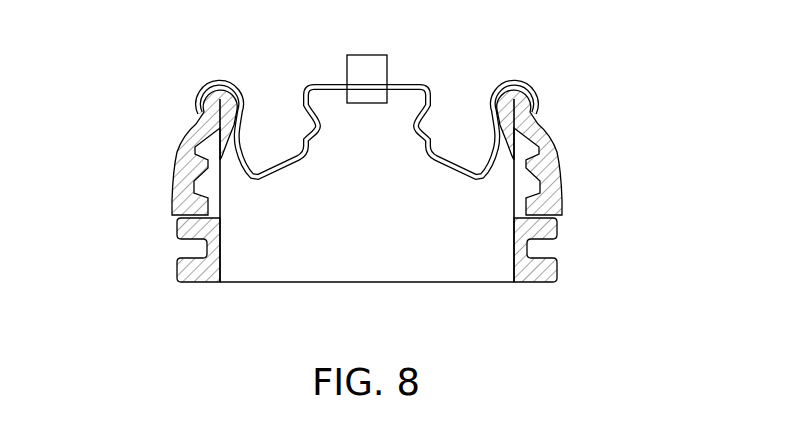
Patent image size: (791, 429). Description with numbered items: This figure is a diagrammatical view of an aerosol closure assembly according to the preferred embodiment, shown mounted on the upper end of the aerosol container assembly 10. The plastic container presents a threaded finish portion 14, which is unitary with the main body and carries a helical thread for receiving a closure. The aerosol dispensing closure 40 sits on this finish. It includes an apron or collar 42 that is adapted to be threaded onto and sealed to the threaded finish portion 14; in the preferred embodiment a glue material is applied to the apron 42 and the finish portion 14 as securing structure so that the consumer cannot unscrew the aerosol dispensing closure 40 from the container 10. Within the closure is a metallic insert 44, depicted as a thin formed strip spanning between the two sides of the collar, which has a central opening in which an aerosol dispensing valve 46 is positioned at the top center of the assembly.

The aerosol container assembly 10 is at (370, 190).
The threaded finish portion 14 is at (146, 233).
The aerosol dispensing closure 40 is at (405, 110).
The apron or collar 42 is at (563, 180).
The metallic insert 44 is at (430, 123).
The aerosol dispensing valve 46 is at (369, 55).